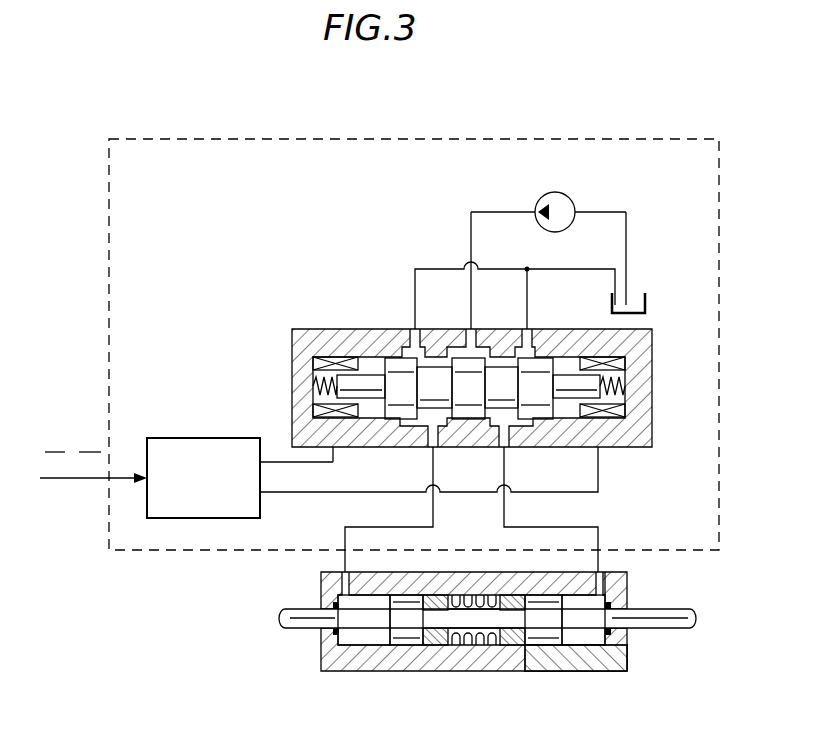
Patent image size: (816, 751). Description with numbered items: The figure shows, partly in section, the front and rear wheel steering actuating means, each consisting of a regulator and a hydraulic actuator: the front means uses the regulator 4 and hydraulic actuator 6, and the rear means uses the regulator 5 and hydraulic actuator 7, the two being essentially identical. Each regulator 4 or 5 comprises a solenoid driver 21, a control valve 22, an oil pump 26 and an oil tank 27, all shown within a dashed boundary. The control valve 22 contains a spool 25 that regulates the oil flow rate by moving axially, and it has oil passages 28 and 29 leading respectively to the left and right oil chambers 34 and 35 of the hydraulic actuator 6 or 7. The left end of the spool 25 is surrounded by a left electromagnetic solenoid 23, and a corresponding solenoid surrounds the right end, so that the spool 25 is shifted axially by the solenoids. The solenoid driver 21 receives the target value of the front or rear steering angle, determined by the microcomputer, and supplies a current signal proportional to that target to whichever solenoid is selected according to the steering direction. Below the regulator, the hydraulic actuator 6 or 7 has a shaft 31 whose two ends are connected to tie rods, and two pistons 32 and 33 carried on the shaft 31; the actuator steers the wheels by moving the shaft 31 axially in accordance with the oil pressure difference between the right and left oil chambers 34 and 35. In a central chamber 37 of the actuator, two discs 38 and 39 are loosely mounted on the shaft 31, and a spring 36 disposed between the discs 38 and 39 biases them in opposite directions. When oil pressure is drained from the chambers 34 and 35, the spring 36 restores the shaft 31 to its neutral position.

The front wheel steering regulator 4 is at (414, 311).
The rear wheel steering regulator 5 is at (656, 139).
The front hydraulic actuator 6 is at (432, 632).
The rear hydraulic actuator 7 is at (310, 656).
The solenoid driver 21 is at (244, 438).
The control valve 22 is at (352, 318).
The left electromagnetic solenoid 23 is at (313, 360).
The spool 25 is at (567, 387).
The oil pump 26 is at (571, 199).
The oil tank 27 is at (648, 305).
The oil passage 28 is at (433, 474).
The oil passage 29 is at (504, 472).
The shaft 31 is at (580, 645).
The piston 32 is at (402, 640).
The piston 33 is at (540, 645).
The left oil chamber 34 is at (353, 640).
The right oil chamber 35 is at (603, 640).
The spring 36 is at (468, 572).
The central chamber 37 is at (478, 645).
The disc 38 is at (440, 645).
The disc 39 is at (515, 645).